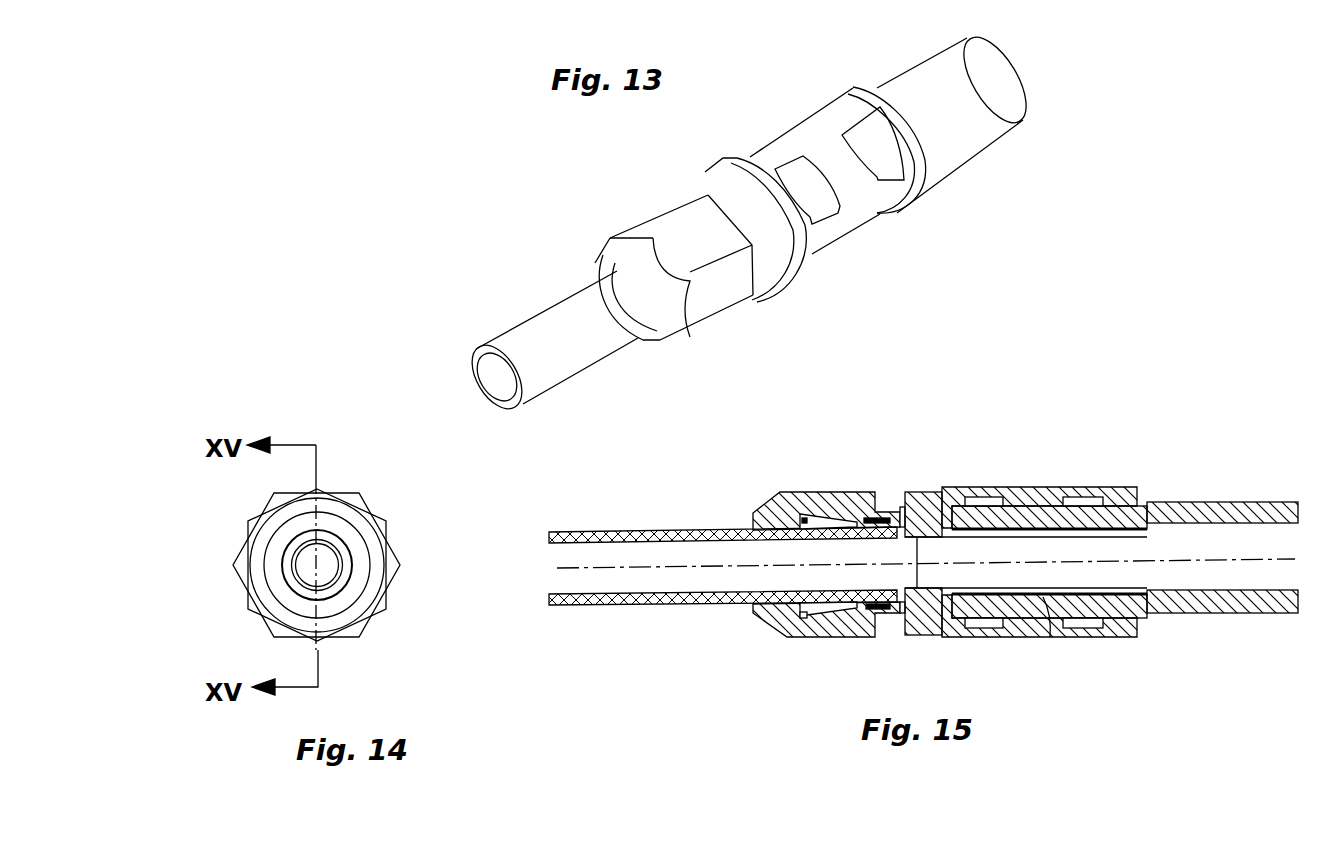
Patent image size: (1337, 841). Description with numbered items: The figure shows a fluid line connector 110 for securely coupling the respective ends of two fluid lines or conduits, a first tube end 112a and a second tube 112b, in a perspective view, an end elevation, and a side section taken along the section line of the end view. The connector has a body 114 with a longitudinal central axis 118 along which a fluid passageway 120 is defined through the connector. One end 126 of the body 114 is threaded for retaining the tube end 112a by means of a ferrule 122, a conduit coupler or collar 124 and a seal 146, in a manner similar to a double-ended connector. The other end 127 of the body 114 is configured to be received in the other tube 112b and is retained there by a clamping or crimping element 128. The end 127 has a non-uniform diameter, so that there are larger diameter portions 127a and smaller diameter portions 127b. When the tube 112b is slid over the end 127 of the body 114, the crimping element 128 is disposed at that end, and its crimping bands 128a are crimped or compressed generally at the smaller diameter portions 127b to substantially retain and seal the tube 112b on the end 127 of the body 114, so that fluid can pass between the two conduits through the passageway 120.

In FIG. 13, the fluid line connector 110 is at (775, 82).
In FIG. 14, the fluid line connector 110 is at (393, 492).
In FIG. 15, the fluid line connector 110 is at (948, 425).
In FIG. 13, the tube end 112a is at (560, 362).
In FIG. 14, the tube end 112a is at (335, 582).
In FIG. 13, the tube 112b is at (988, 122).
In FIG. 15, the tube 112b is at (1225, 608).
In FIG. 13, the body 114 is at (770, 300).
In FIG. 15, the body 114 is at (923, 630).
In FIG. 15, the longitudinal central axis 118 is at (658, 570).
In FIG. 14, the fluid passageway 120 is at (305, 570).
In FIG. 15, the fluid passageway 120 is at (718, 580).
In FIG. 15, the ferrule 122 is at (803, 518).
In FIG. 13, the conduit coupler 124 is at (708, 312).
In FIG. 14, the conduit coupler 124 is at (367, 532).
In FIG. 15, the conduit coupler 124 is at (808, 497).
In FIG. 15, the end of the body 126 is at (853, 612).
In FIG. 15, the other end of the body 127 is at (1157, 508).
In FIG. 15, the larger diameter portions 127a is at (1048, 625).
In FIG. 15, the smaller diameter portions 127b is at (983, 510).
In FIG. 13, the crimping element 128 is at (817, 115).
In FIG. 14, the crimping element 128 is at (385, 602).
In FIG. 15, the crimping element 128 is at (1033, 483).
In FIG. 13, the crimping bands 128a is at (892, 280).
In FIG. 15, the seal 146 is at (890, 617).